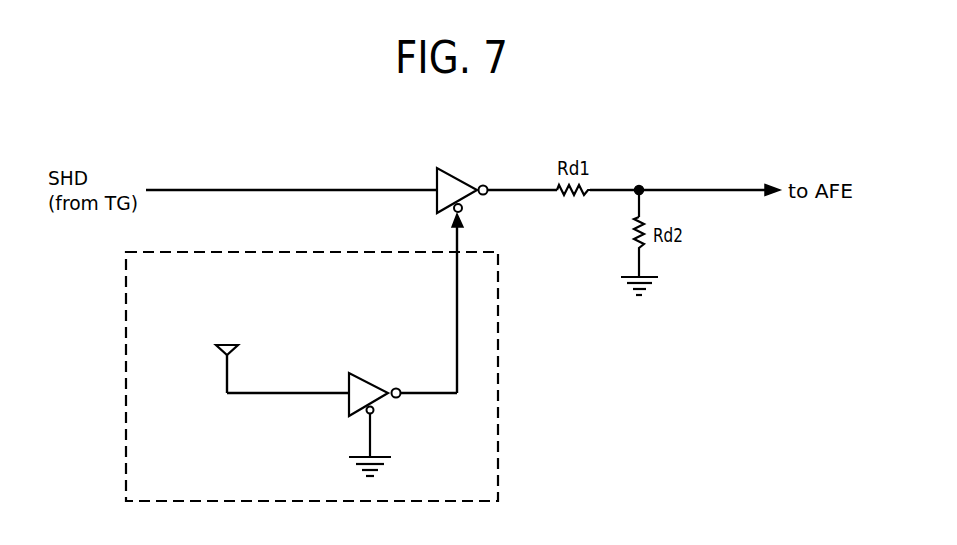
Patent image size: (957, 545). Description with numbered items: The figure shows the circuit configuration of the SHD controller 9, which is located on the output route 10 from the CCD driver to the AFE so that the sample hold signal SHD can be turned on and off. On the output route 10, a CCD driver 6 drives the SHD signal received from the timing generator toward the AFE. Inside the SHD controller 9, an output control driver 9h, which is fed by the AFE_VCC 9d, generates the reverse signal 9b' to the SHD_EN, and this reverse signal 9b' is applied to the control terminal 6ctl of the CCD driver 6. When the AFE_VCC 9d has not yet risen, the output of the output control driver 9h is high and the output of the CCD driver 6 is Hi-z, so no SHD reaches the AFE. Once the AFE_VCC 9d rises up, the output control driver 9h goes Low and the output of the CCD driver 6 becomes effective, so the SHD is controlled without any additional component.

The output route 10 is at (262, 190).
The CCD driver (DRV1) 6 is at (435, 204).
The control terminal of driver DRV1 6ctl is at (463, 211).
The SHD controller (SHD_CTL) 9 is at (500, 400).
The reverse signal to the SHD_EN 9b' is at (416, 309).
The AFE_VCC 9d is at (243, 353).
The output control driver (DRV2) 9h is at (375, 410).